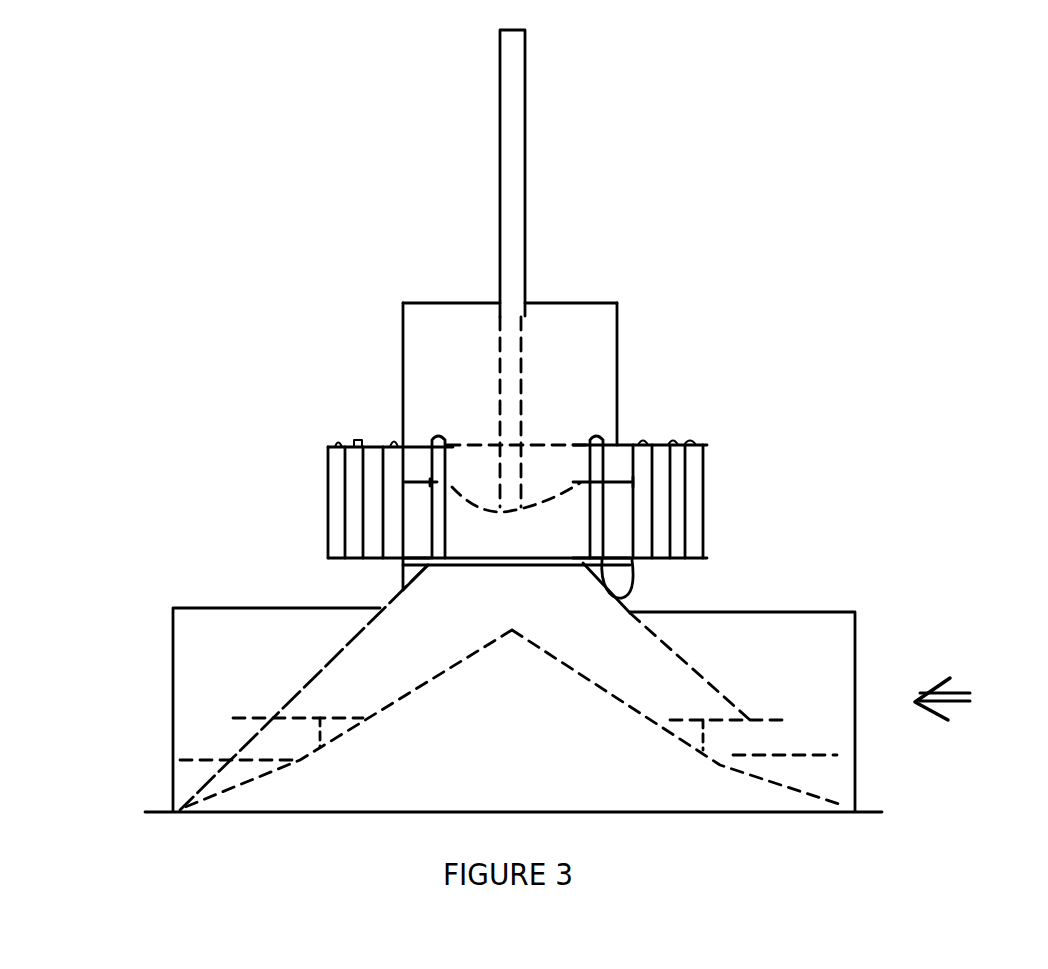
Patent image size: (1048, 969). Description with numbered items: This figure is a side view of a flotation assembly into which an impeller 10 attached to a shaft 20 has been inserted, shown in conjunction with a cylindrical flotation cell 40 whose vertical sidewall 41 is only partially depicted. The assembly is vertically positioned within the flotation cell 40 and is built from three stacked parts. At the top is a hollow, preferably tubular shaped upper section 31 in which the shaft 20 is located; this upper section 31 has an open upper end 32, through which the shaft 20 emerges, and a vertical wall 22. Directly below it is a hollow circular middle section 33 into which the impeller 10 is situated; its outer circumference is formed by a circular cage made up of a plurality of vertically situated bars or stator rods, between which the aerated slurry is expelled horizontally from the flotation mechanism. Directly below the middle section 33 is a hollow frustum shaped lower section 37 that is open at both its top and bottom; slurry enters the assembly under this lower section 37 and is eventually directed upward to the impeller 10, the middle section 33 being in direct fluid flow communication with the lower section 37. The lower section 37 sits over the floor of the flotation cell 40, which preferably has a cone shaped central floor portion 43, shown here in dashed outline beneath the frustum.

The impeller 10 is at (553, 472).
The shaft 20 is at (532, 155).
The vertical wall 22 is at (622, 333).
The upper section 31 is at (320, 305).
The open upper end 32 is at (558, 293).
The middle section 33 is at (292, 442).
The lower section 37 is at (287, 575).
The flotation cell 40 is at (969, 699).
The vertical sidewall 41 is at (170, 714).
The cone shaped central floor portion 43 is at (533, 708).